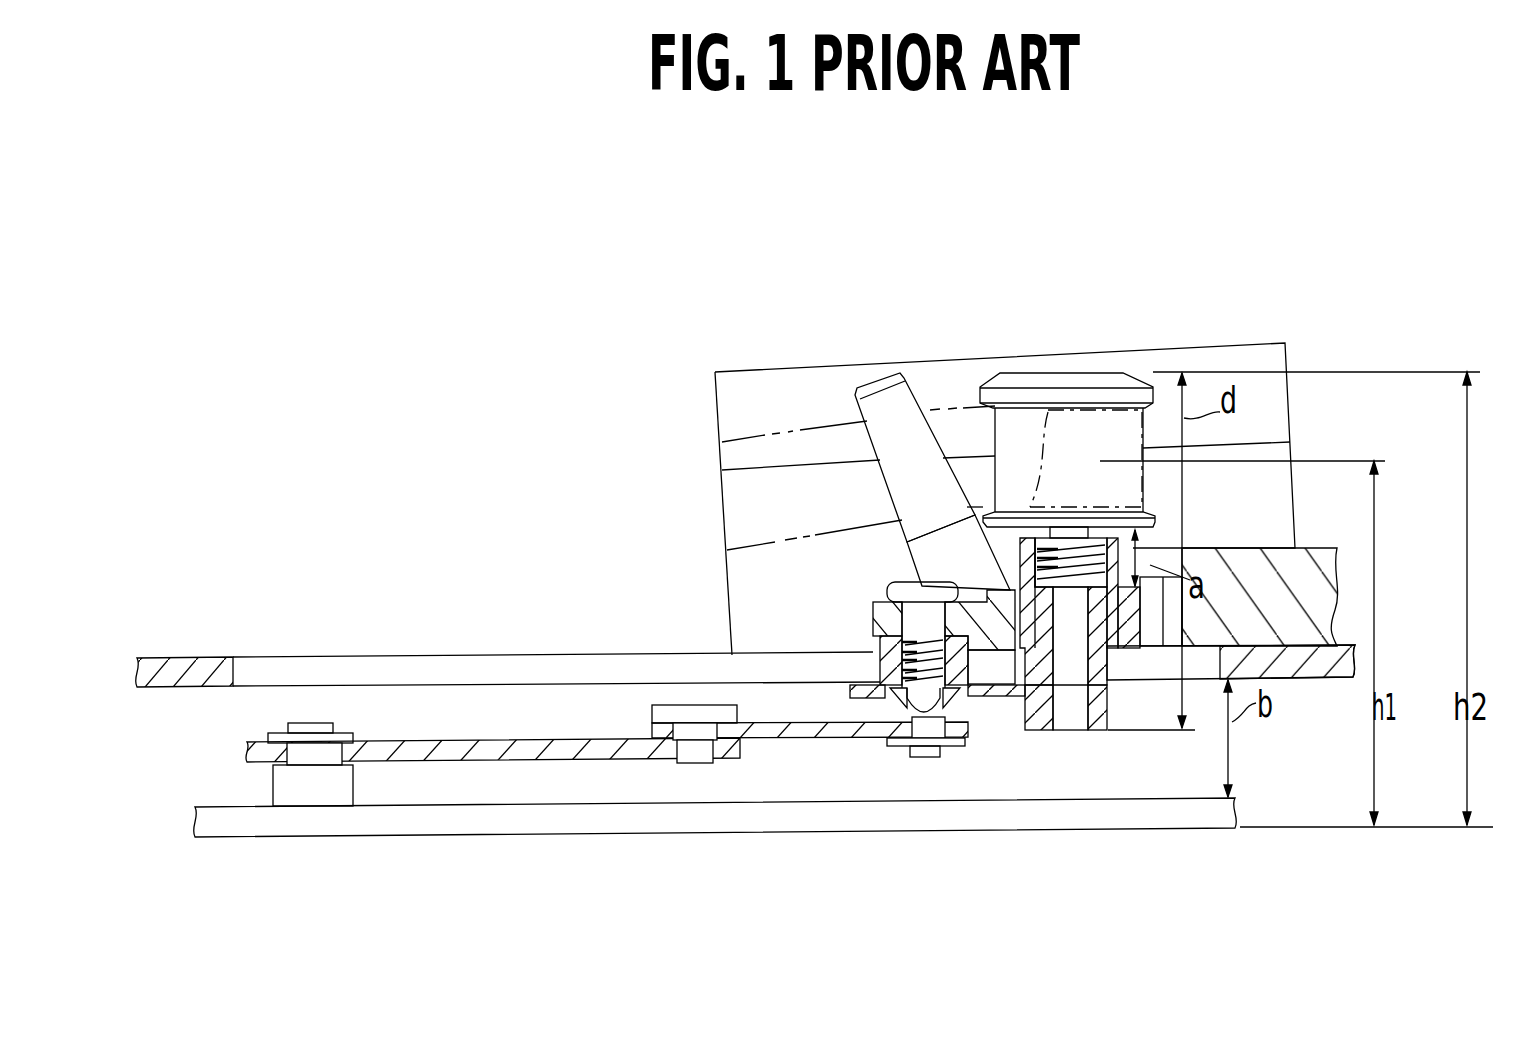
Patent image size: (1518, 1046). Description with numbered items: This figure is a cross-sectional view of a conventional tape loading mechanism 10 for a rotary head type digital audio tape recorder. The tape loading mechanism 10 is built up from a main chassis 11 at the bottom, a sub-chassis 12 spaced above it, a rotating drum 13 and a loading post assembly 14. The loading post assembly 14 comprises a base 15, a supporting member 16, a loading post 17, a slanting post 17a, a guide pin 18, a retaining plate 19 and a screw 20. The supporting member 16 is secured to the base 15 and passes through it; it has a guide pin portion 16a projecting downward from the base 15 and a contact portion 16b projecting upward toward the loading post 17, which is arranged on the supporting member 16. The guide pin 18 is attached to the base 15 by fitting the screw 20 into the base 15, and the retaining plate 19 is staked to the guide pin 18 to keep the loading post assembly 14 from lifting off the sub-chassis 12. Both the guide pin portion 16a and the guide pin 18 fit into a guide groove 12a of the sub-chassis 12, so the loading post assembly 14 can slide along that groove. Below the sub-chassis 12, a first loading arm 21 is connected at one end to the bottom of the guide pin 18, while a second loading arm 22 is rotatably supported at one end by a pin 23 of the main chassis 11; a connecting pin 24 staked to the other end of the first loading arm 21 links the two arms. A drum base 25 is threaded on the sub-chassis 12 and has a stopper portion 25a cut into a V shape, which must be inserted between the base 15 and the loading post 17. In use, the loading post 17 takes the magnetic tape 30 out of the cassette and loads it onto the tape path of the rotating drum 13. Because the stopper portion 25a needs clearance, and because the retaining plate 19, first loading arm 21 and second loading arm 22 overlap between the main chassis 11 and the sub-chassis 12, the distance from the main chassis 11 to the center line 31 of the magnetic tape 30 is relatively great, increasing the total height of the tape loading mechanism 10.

The tape loading mechanism 10 is at (1220, 200).
The main chassis 11 is at (1178, 820).
The sub-chassis 12 is at (202, 657).
The guide groove 12a is at (333, 672).
The rotating drum 13 is at (735, 370).
The loading post assembly 14 is at (967, 381).
The base 15 is at (875, 612).
The supporting member 16 is at (1102, 615).
The guide pin portion 16a is at (1110, 648).
The contact portion 16b is at (1123, 547).
The loading post 17 is at (1105, 378).
The slanting post 17a is at (885, 400).
The guide pin 18 is at (978, 690).
The retaining plate 19 is at (972, 653).
The screw 20 is at (902, 585).
The first loading arm 21 is at (817, 738).
The second loading arm 22 is at (490, 762).
The pin 23 is at (300, 765).
The connecting pin 24 is at (702, 708).
The drum base 25 is at (1322, 596).
The stopper portion 25a is at (1105, 545).
The magnetic tape 30 is at (1128, 431).
The center line 31 is at (1312, 461).